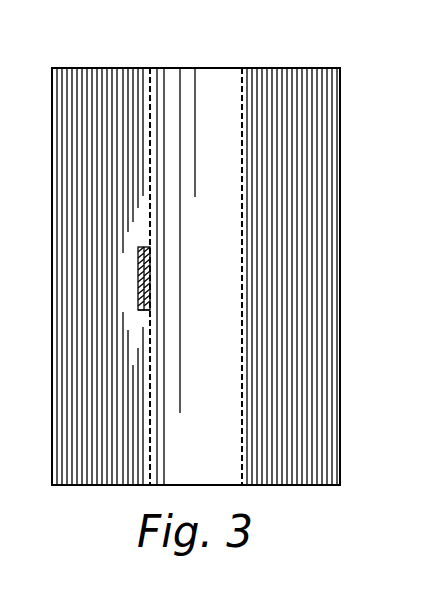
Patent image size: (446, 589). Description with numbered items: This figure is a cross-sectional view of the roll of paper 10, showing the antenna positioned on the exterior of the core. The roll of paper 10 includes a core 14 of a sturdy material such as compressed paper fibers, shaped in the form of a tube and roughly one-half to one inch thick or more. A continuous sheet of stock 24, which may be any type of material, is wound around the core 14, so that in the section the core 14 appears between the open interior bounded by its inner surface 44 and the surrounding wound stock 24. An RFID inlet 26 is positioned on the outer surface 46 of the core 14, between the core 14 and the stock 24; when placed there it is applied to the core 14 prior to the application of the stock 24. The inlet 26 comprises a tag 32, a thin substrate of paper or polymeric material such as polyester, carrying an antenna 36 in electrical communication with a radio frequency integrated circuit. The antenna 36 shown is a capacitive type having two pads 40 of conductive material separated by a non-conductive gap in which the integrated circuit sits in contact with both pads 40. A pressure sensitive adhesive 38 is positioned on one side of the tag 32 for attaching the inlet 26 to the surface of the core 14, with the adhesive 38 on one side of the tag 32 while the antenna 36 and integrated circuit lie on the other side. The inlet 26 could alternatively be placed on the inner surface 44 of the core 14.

The roll of paper 10 is at (358, 87).
The core 14 is at (243, 143).
The stock 24 is at (280, 400).
The RFID inlet 26 is at (130, 318).
The tag 32 is at (140, 246).
The antenna 36 is at (128, 292).
The pressure sensitive adhesive 38 is at (150, 280).
The pads 40 is at (137, 280).
The inner surface 44 is at (237, 117).
The outer surface 46 is at (150, 127).